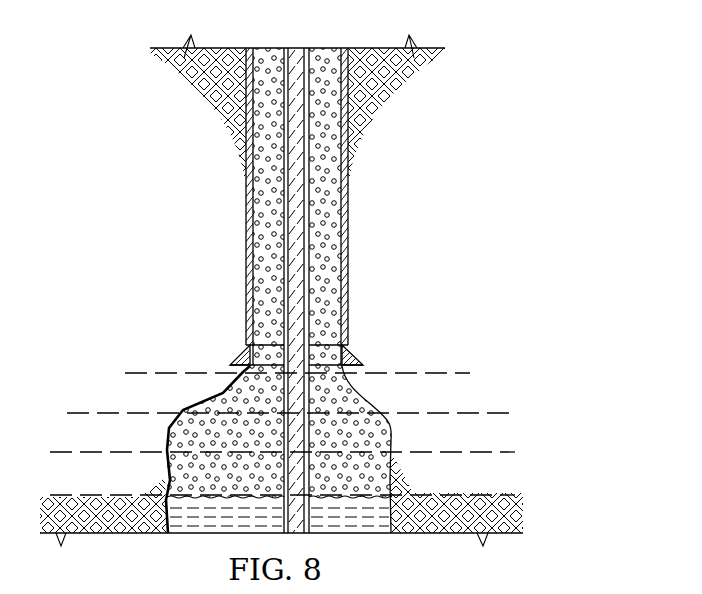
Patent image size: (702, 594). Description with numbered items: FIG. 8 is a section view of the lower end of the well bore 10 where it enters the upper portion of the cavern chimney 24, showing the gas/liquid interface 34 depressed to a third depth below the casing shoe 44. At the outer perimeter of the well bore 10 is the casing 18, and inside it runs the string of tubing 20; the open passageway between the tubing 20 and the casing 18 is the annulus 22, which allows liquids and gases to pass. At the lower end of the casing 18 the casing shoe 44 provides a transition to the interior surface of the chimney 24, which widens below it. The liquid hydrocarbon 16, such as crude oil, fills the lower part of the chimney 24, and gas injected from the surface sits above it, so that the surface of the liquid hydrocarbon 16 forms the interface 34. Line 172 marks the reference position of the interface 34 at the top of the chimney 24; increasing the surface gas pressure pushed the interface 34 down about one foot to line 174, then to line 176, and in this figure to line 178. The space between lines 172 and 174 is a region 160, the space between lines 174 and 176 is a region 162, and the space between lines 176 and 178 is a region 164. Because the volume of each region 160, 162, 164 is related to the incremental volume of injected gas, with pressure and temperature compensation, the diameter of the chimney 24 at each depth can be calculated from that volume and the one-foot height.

The well bore 10 is at (231, 192).
The liquid hydrocarbon 16 is at (360, 533).
The casing 18 is at (349, 232).
The tubing 20 is at (321, 62).
The annulus 22 is at (331, 167).
The chimney 24 is at (193, 402).
The gas/liquid interface 34 is at (373, 495).
The casing shoe 44 is at (240, 363).
The region 160 is at (355, 403).
The region 162 is at (168, 435).
The region 164 is at (170, 475).
The line 172 is at (438, 372).
The line 174 is at (485, 412).
The line 176 is at (483, 452).
The line 178 is at (485, 495).